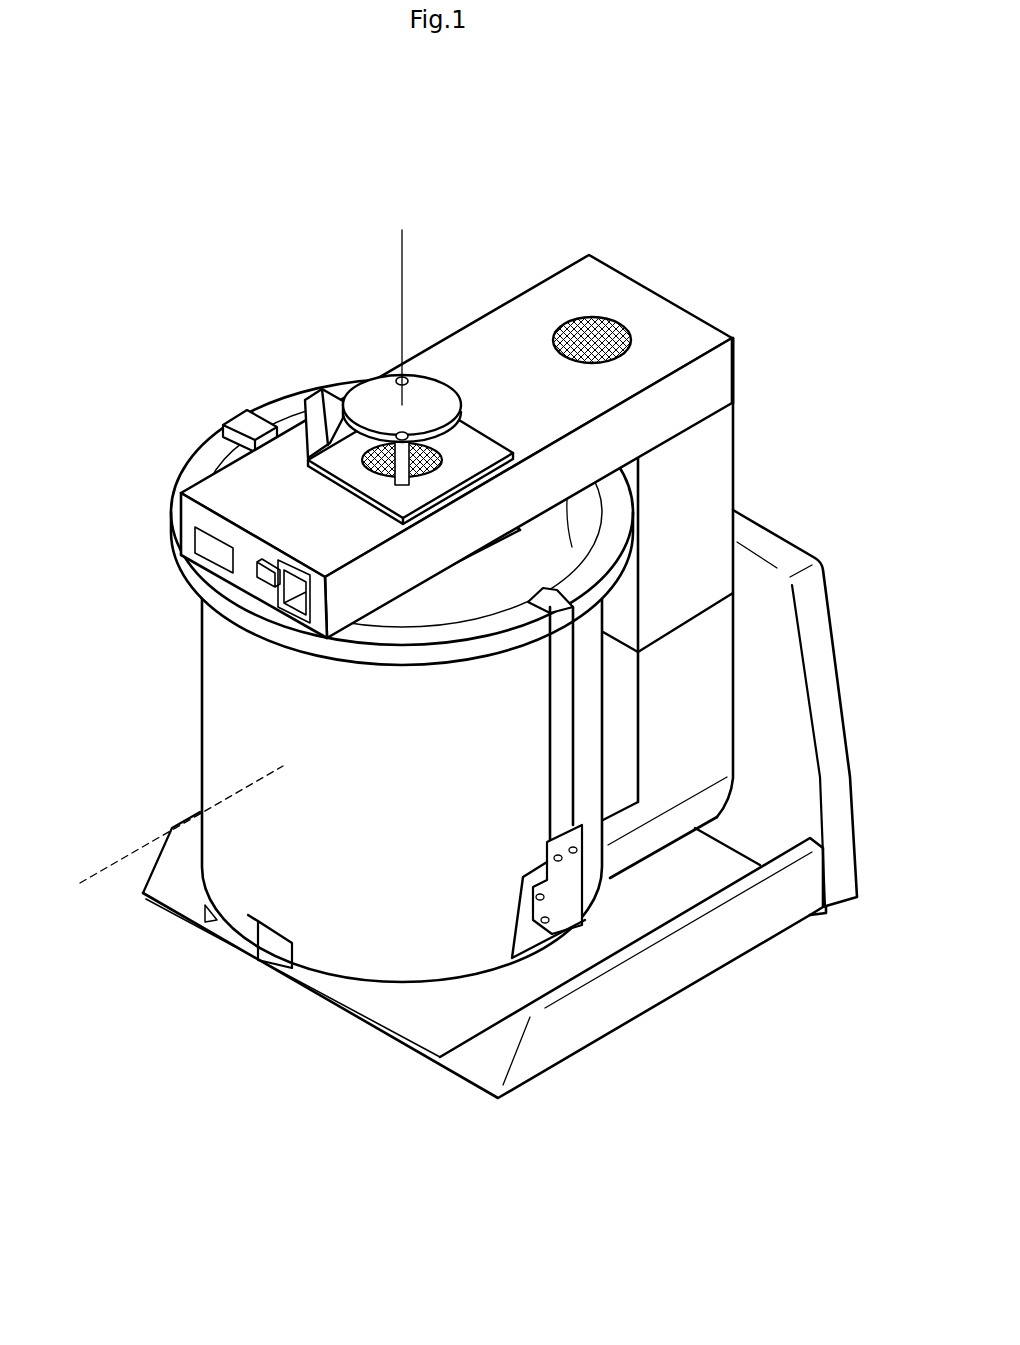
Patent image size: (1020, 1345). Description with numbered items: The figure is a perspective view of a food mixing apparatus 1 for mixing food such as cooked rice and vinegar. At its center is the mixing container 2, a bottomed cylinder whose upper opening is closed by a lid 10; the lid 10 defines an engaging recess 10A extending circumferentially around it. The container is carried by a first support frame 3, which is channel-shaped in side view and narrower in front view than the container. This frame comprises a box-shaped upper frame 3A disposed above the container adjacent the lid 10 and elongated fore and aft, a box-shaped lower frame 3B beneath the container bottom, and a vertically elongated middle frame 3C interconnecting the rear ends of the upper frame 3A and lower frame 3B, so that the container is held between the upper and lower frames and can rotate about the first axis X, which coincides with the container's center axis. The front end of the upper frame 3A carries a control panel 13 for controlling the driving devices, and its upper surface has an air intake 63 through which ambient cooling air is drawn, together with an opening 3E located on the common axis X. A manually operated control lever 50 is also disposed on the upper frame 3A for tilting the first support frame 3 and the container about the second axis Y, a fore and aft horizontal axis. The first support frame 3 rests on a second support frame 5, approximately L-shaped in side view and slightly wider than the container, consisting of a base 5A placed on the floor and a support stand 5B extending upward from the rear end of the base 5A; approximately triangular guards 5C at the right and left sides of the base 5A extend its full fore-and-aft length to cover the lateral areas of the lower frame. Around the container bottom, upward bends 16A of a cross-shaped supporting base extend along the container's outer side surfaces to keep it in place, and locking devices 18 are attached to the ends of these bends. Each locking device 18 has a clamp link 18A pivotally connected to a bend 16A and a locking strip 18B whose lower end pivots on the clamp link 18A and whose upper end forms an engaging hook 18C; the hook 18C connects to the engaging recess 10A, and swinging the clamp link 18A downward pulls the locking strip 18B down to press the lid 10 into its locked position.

The food mixing apparatus 1 is at (717, 262).
The mixing container 2 is at (378, 963).
The first support frame 3 is at (500, 447).
The upper frame 3A is at (737, 377).
The lower frame 3B is at (628, 848).
The middle frame 3C is at (722, 682).
The opening 3E is at (363, 465).
The second support frame 5 is at (547, 1040).
The base 5A is at (430, 1045).
The support stand 5B is at (818, 600).
The guards 5C is at (177, 878).
The lid 10 is at (388, 665).
The engaging recess 10A is at (578, 540).
The control panel 13 is at (253, 587).
The upward bends 16A is at (518, 918).
The locking device 18 is at (362, 643).
The clamp link 18A is at (514, 879).
The locking strip 18B is at (548, 742).
The engaging hook 18C is at (268, 432).
The control lever 50 is at (468, 532).
The air intake 63 is at (547, 346).
The first axis X is at (400, 283).
The second axis Y is at (135, 845).